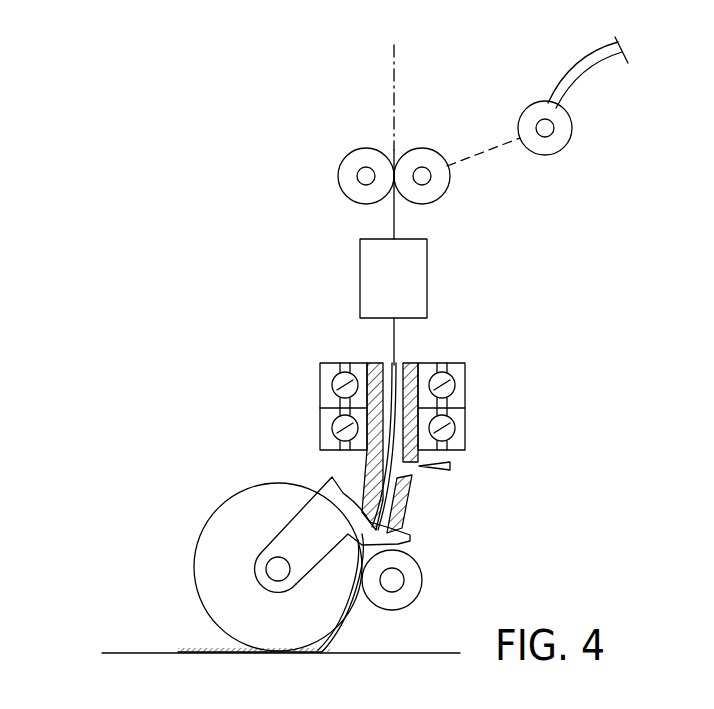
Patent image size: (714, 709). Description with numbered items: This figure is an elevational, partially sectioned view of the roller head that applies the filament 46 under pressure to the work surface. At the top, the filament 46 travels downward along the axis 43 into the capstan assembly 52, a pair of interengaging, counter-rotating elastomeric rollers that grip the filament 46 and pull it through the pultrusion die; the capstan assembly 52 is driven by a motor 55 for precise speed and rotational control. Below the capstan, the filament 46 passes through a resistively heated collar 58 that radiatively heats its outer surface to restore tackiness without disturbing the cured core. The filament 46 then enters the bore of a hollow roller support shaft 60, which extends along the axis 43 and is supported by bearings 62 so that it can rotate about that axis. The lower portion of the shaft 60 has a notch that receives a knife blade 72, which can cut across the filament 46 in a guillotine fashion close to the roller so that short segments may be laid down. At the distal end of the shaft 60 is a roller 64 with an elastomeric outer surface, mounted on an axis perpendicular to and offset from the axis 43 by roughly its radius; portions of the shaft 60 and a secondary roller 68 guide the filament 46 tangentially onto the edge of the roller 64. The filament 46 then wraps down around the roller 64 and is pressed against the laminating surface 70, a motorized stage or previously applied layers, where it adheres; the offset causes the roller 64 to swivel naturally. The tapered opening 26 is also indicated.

The axis 43 is at (392, 82).
The capstan assembly 52 is at (341, 151).
The motor 55 is at (566, 146).
The filament 46 is at (393, 207).
The resistively heated collar 58 is at (360, 278).
The hollow roller support shaft 60 is at (420, 363).
The bearings 62 is at (320, 425).
The knife blade 72 is at (436, 472).
The roller 64 is at (232, 513).
The secondary roller 68 is at (423, 574).
The opening 26 is at (348, 628).
The laminating surface 70 is at (128, 652).